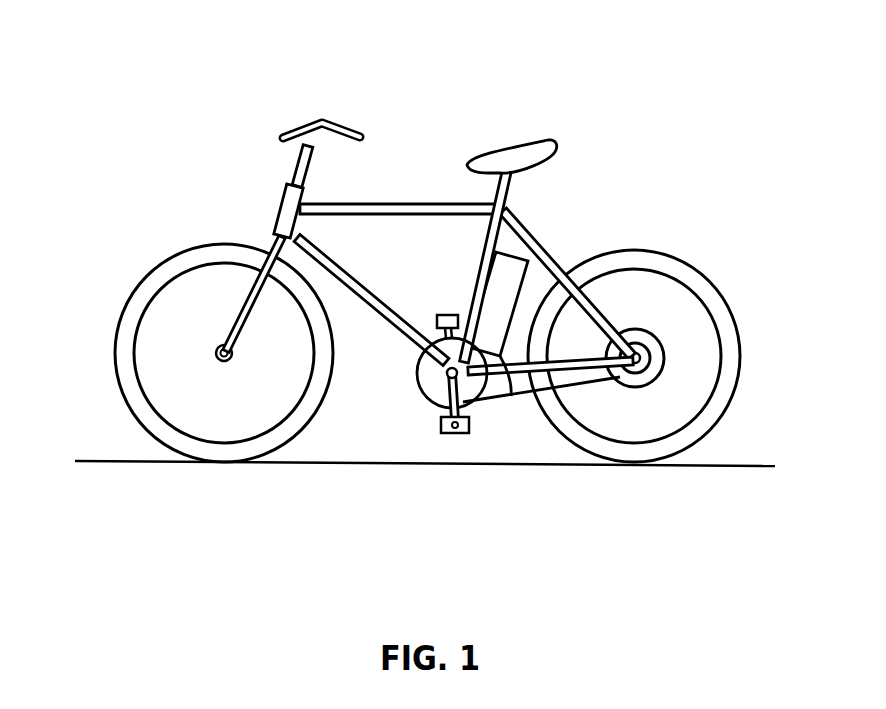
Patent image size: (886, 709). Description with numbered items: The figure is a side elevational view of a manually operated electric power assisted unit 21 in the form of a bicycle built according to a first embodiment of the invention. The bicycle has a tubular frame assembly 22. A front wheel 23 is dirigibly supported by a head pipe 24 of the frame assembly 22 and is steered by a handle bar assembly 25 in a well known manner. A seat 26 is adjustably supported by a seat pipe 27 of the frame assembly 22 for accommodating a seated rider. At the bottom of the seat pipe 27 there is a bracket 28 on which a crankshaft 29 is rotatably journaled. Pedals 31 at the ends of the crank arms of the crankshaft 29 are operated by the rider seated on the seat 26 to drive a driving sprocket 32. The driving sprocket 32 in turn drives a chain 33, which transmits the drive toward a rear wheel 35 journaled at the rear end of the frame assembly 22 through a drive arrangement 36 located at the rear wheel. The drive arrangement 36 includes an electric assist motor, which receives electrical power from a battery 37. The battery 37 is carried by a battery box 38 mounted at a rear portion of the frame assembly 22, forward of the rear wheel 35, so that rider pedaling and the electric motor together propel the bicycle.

The manually operated electric power assisted unit 21 is at (781, 72).
The tubular frame assembly 22 is at (401, 202).
The front wheel 23 is at (160, 263).
The head pipe 24 is at (282, 200).
The handle bar assembly 25 is at (347, 120).
The seat 26 is at (558, 133).
The seat pipe 27 is at (506, 213).
The bracket 28 is at (440, 385).
The crankshaft 29 is at (440, 400).
The pedals 31 is at (447, 315).
The driving sprocket 32 is at (417, 372).
The chain 33 is at (512, 396).
The rear wheel 35 is at (710, 278).
The drive arrangement 36 is at (662, 345).
The battery 37 is at (563, 268).
The battery box 38 is at (530, 238).